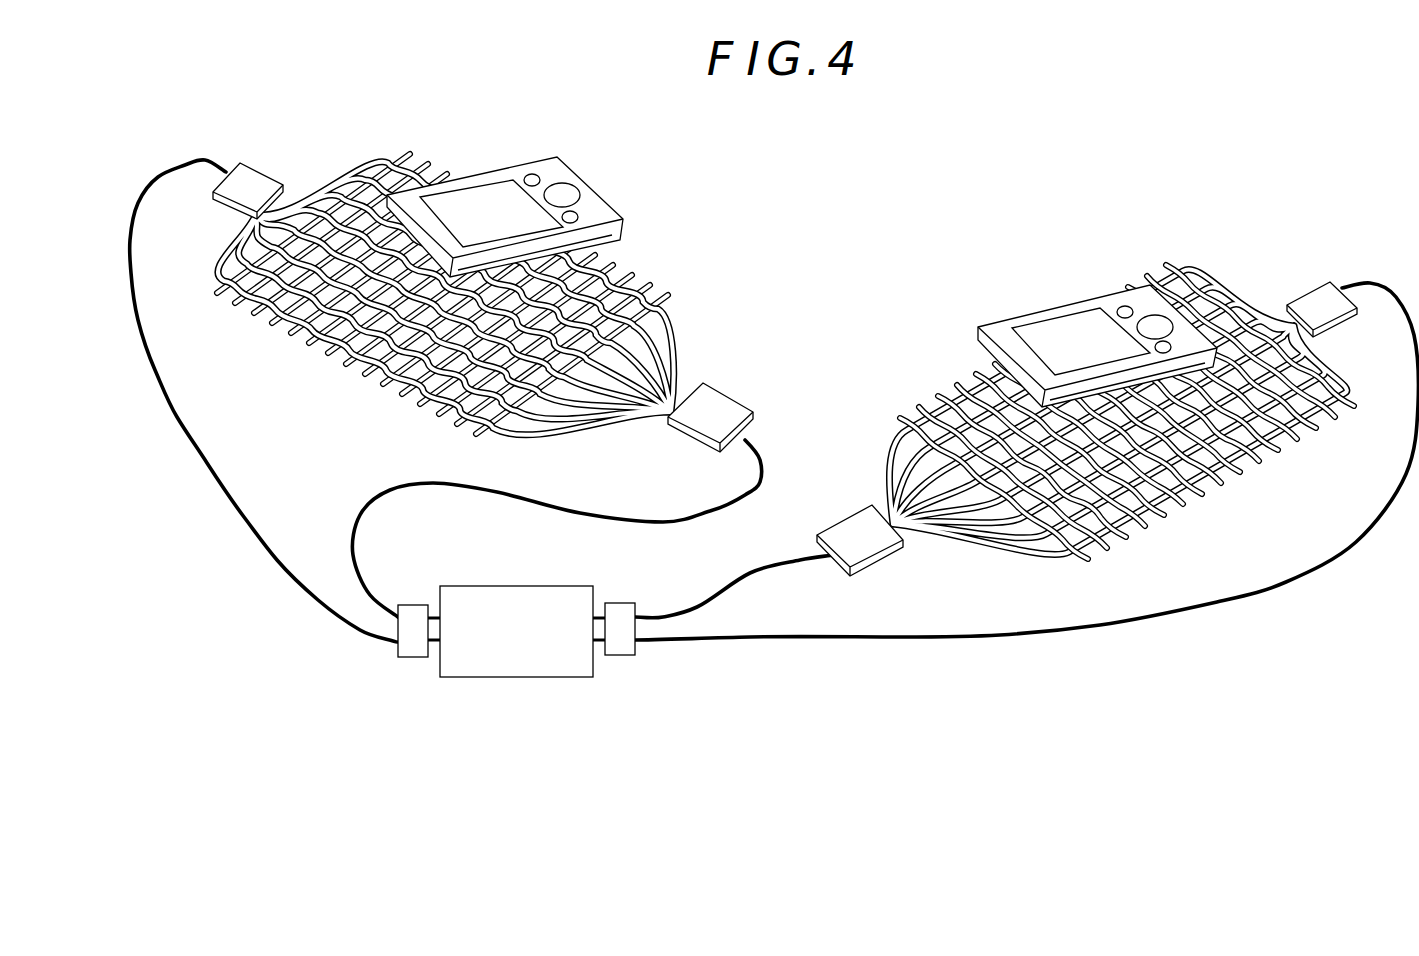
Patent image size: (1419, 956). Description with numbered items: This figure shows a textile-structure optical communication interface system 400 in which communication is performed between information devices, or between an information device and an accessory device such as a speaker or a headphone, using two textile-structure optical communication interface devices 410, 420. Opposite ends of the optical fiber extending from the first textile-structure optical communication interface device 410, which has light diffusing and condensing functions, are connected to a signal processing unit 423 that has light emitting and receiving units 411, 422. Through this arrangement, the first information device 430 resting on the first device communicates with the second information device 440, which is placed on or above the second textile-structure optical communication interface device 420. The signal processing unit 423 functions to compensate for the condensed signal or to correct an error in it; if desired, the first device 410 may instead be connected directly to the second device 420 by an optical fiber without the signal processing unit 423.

The textile-structure optical communication interface system 400 is at (780, 155).
The first textile-structure optical communication interface device 410 is at (687, 268).
The second textile-structure optical communication interface device 420 is at (913, 373).
The first information device 430 is at (572, 177).
The second information device 440 is at (1158, 300).
The light emitting and receiving unit 411 is at (410, 610).
The light emitting and receiving unit 422 is at (622, 607).
The signal processing unit 423 is at (520, 586).